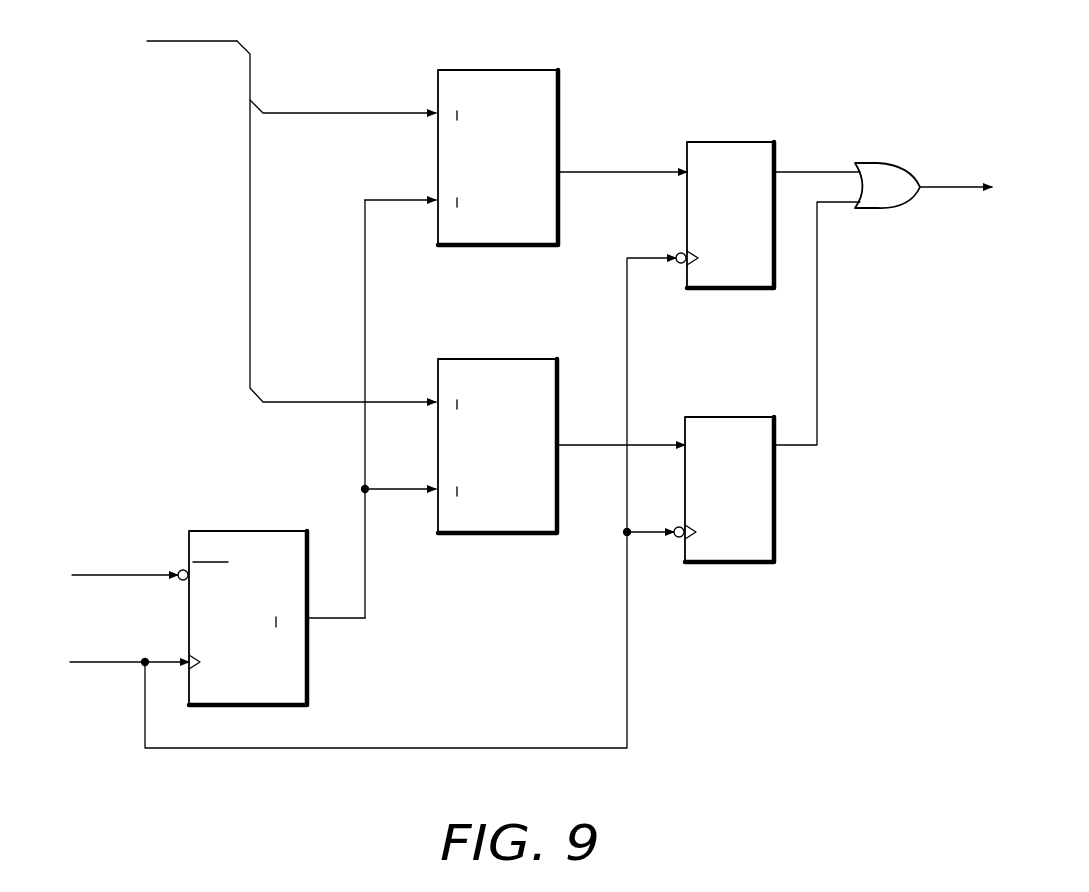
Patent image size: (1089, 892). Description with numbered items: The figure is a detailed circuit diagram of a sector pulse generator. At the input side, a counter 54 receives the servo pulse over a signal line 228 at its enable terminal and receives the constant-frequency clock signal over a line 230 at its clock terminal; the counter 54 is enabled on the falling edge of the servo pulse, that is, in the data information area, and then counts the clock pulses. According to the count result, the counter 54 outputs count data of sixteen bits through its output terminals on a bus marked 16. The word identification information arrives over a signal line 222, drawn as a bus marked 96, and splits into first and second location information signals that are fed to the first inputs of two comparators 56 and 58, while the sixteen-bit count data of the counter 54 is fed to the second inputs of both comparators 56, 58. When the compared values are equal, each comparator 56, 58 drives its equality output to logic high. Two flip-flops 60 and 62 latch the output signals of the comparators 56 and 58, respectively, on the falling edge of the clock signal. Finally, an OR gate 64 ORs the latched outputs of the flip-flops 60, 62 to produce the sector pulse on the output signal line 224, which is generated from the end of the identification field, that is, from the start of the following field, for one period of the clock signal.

The counter 54 is at (247, 531).
The comparator 56 is at (496, 70).
The comparator 58 is at (495, 359).
The flip-flop 60 is at (730, 142).
The flip-flop 62 is at (728, 417).
The OR gate 64 is at (886, 163).
The WID bus 96 is at (217, 32).
The 16-bit bus 16 is at (403, 105).
The signal line 222 is at (179, 43).
The signal line 224 is at (948, 196).
The signal line 228 is at (117, 567).
The CLK signal line 230 is at (117, 655).